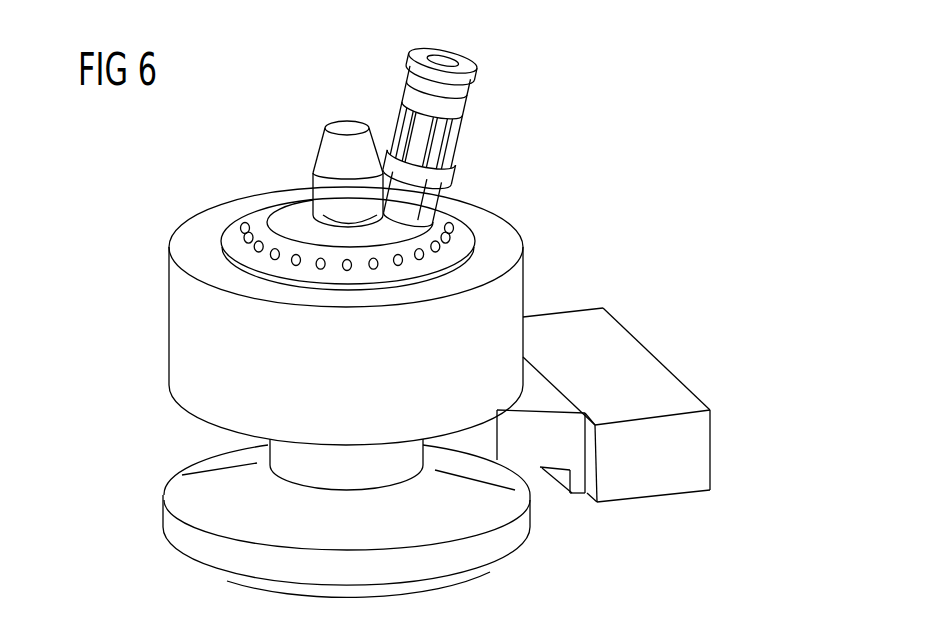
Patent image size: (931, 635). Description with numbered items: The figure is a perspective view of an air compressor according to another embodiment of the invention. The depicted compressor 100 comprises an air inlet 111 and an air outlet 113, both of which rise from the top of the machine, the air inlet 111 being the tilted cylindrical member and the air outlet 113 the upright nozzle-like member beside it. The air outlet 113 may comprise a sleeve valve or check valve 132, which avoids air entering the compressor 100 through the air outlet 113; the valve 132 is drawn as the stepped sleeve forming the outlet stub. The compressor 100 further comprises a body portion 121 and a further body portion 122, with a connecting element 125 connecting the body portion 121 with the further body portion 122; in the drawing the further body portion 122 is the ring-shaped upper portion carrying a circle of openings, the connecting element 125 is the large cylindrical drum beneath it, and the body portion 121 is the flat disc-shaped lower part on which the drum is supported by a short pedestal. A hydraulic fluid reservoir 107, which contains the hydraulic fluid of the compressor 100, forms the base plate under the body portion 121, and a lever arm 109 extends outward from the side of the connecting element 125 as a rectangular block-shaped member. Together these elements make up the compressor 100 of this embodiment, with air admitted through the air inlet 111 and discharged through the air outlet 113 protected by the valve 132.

The compressor 100 is at (391, 320).
The hydraulic fluid reservoir 107 is at (487, 550).
The lever arm 109 is at (660, 482).
The air inlet 111 is at (463, 108).
The air outlet 113 is at (345, 127).
The body portion 121 is at (159, 516).
The further body portion 122 is at (227, 231).
The connecting element 125 is at (165, 318).
The sleeve valve or check valve 132 is at (323, 185).